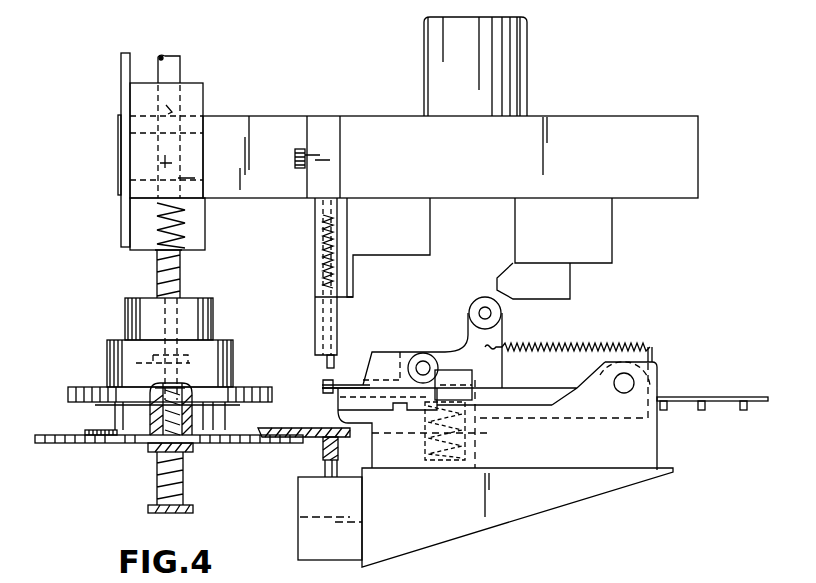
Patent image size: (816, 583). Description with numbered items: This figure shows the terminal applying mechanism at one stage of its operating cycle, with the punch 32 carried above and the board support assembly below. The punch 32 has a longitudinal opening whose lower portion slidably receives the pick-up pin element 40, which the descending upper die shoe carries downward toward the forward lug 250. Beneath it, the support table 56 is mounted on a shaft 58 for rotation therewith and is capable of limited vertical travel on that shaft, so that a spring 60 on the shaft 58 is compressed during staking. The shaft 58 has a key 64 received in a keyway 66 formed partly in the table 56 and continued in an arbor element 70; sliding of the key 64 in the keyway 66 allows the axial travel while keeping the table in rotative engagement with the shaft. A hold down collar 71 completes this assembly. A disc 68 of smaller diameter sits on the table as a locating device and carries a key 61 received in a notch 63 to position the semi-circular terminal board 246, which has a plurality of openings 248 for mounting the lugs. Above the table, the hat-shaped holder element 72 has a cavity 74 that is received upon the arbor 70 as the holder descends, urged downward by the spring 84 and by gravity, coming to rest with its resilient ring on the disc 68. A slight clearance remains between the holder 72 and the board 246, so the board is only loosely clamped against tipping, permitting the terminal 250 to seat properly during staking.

The punch 32 is at (316, 335).
The pick-up pin element 40 is at (335, 362).
The support table 56 is at (98, 444).
The shaft 58 is at (184, 472).
The spring 60 is at (186, 490).
The key 61 is at (260, 437).
The notch 63 is at (262, 428).
The key 64 is at (150, 454).
The keyway 66 is at (152, 430).
The disc 68 is at (83, 432).
The arbor element 70 is at (117, 410).
The hold down collar 71 is at (188, 390).
The hat-shaped holder element 72 is at (233, 345).
The cavity 74 is at (120, 373).
The spring 84 is at (183, 262).
The semi-circular terminal board 246 is at (320, 420).
The openings 248 is at (335, 437).
The forward lug 250 is at (327, 382).